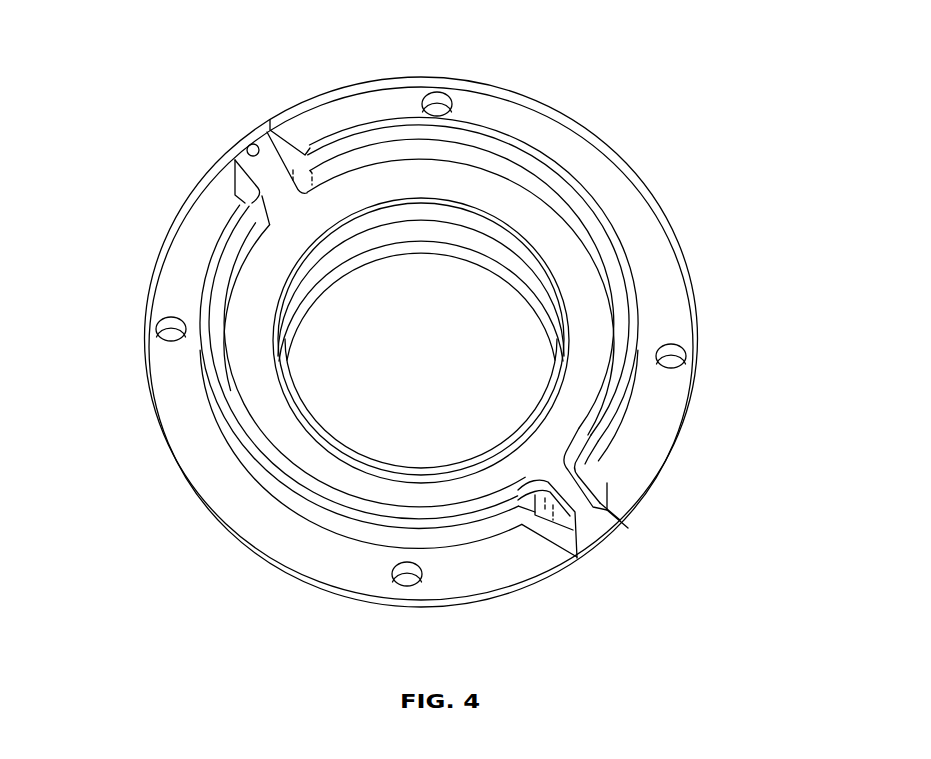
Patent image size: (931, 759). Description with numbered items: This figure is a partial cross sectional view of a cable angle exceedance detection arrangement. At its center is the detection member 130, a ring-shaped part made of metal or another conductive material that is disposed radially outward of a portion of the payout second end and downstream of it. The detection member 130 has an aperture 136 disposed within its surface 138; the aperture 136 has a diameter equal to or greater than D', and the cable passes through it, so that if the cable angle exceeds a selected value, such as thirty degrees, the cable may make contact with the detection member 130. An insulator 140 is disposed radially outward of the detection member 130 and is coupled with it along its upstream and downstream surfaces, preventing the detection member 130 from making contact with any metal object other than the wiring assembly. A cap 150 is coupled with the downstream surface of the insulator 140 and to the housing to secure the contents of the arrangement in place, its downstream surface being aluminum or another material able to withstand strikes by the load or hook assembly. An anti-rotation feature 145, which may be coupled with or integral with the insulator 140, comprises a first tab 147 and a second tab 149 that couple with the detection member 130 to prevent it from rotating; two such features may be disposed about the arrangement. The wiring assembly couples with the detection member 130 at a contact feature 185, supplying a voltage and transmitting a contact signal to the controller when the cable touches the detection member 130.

The detection member 130 is at (597, 323).
The aperture 136 is at (378, 350).
The surface 138 is at (500, 248).
The insulator 140 is at (491, 505).
The anti-rotation feature 145 is at (262, 130).
The first tab 147 is at (281, 143).
The second tab 149 is at (245, 168).
The cap 150 is at (660, 420).
The contact feature 185 is at (247, 145).